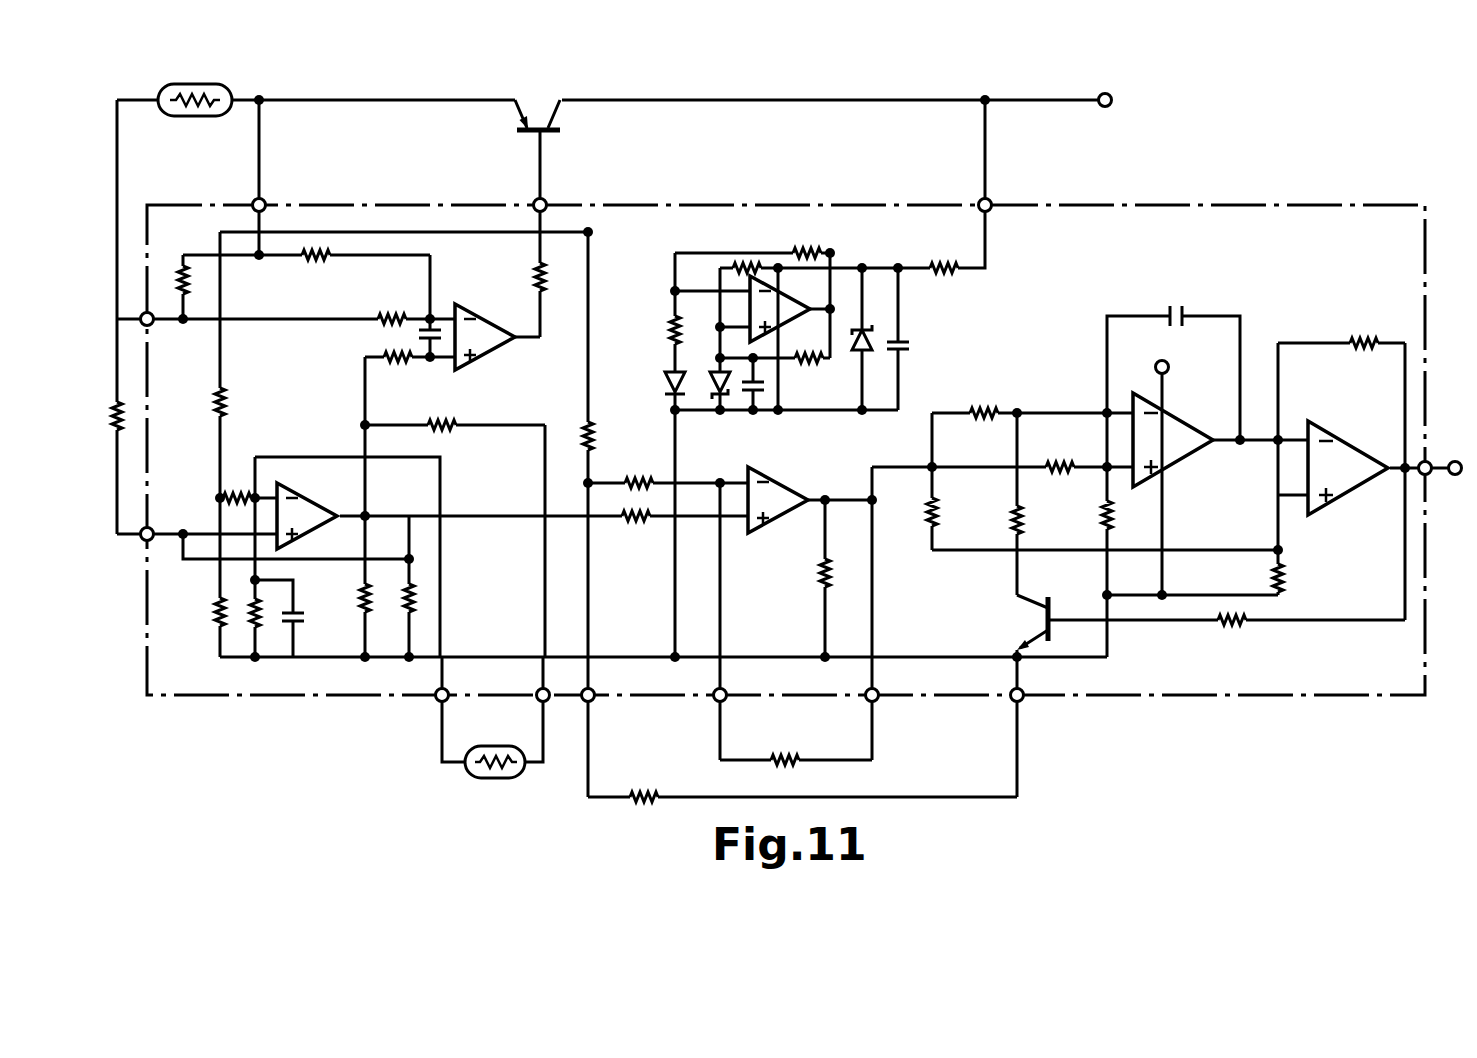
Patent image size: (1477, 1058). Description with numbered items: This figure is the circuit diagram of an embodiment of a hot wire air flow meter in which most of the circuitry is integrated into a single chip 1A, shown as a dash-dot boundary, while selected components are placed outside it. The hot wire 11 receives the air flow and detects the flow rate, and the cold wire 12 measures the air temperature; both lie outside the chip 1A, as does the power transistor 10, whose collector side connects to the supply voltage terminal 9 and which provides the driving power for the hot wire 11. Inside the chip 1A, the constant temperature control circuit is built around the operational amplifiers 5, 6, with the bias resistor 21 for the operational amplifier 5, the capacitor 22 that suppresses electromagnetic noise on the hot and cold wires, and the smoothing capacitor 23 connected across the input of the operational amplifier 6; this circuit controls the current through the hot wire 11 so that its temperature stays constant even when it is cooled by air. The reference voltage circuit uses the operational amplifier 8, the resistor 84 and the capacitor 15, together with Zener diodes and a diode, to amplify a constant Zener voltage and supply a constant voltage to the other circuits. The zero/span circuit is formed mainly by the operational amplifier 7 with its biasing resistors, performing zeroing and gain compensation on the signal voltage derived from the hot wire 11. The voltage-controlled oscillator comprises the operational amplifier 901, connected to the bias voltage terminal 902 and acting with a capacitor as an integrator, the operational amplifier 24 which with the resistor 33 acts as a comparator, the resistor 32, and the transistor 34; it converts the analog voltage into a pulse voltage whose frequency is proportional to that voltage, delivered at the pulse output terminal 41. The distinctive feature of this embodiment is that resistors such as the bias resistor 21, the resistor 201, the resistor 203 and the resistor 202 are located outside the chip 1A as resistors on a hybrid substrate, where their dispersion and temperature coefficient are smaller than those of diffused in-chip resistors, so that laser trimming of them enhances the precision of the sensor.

The single chip 1A is at (1202, 204).
The hot wire 11 is at (200, 83).
The power transistor 10 is at (537, 127).
The supply voltage terminal 9 is at (1110, 94).
The resistor 84 is at (943, 262).
The operational amplifier 8 is at (802, 312).
The capacitor 15 is at (908, 340).
The operational amplifier 6 is at (486, 330).
The smoothing capacitor 23 is at (437, 334).
The bias resistor 21 is at (118, 406).
The operational amplifier 5 is at (307, 503).
The resistor 202 is at (593, 433).
The operational amplifier 7 is at (778, 493).
The bias voltage terminal 902 is at (1160, 361).
The operational amplifier 901 is at (1190, 447).
The transistor 34 is at (1186, 306).
The resistor 33 is at (1360, 340).
The resistor 32 is at (985, 403).
The operational amplifier 24 is at (1360, 453).
The pulse output terminal 41 is at (1455, 457).
The capacitor 22 is at (300, 627).
The cold wire 12 is at (493, 745).
The resistor 201 is at (638, 795).
The resistor 203 is at (784, 757).